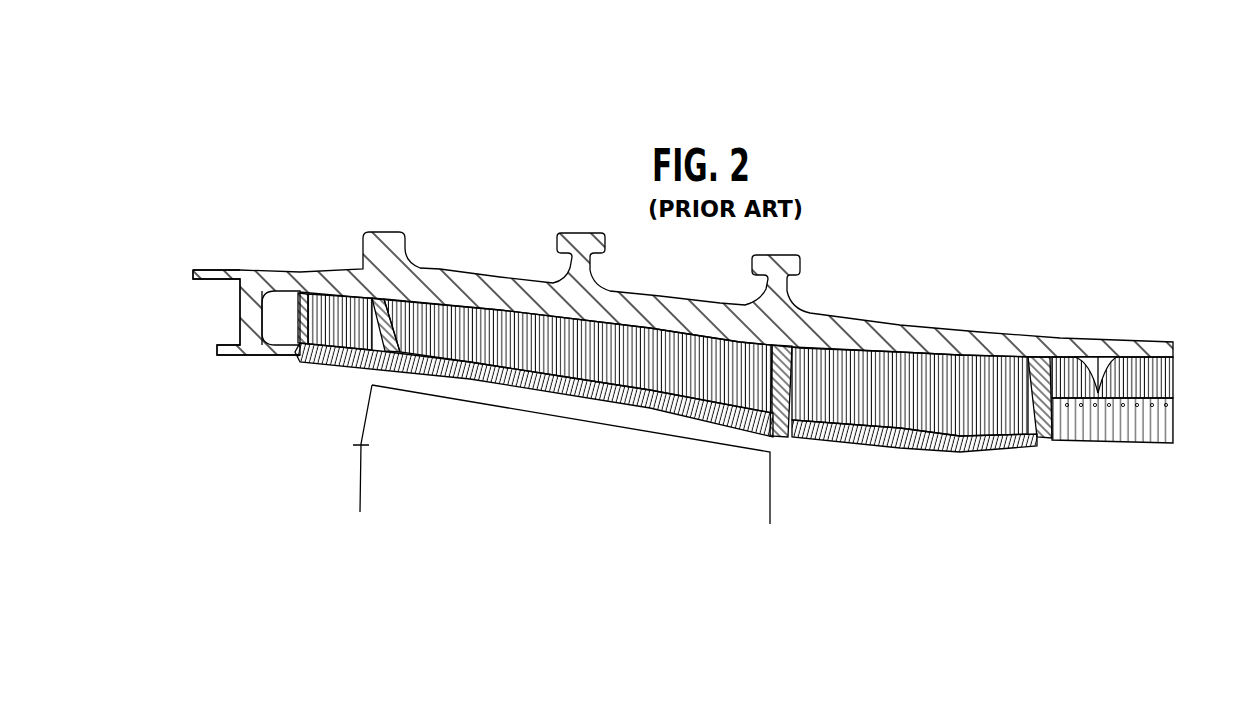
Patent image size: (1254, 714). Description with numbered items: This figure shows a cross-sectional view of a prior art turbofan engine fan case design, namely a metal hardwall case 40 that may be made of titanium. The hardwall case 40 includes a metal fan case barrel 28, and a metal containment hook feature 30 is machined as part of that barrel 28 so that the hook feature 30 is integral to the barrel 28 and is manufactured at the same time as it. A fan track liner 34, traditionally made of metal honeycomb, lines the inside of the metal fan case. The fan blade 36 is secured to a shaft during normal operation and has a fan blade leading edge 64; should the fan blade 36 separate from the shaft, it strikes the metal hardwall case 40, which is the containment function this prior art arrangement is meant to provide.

The metal hardwall case 40 is at (434, 160).
The metal fan case barrel 28 is at (1062, 343).
The metal containment hook feature 30 is at (255, 312).
The fan track liner 34 is at (707, 380).
The fan blade 36 is at (548, 473).
The fan blade leading edge 64 is at (362, 420).